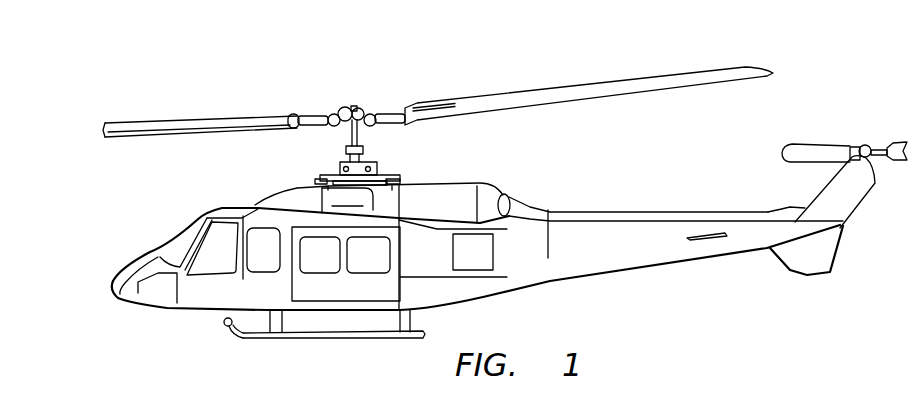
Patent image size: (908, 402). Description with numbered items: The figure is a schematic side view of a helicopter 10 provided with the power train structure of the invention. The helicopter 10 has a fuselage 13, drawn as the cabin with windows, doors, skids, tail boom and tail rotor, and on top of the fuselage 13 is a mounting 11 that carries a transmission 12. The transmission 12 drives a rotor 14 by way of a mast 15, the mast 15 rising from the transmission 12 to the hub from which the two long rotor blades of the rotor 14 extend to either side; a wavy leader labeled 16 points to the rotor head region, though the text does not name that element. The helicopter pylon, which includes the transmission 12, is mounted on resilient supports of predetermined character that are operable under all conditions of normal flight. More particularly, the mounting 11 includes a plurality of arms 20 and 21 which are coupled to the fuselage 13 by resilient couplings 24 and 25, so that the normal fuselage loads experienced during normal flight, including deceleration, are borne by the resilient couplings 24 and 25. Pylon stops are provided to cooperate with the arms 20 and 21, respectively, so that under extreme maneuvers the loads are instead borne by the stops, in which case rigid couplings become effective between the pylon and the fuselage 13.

The helicopter 10 is at (172, 192).
The mounting 11 is at (364, 163).
The transmission 12 is at (350, 162).
The fuselage 13 is at (467, 287).
The rotor 14 is at (259, 117).
The mast 15 is at (360, 124).
The main rotor 16 is at (357, 112).
The arm 20 is at (332, 178).
The arm 21 is at (388, 173).
The resilient coupling 24 is at (313, 185).
The resilient coupling 25 is at (400, 181).